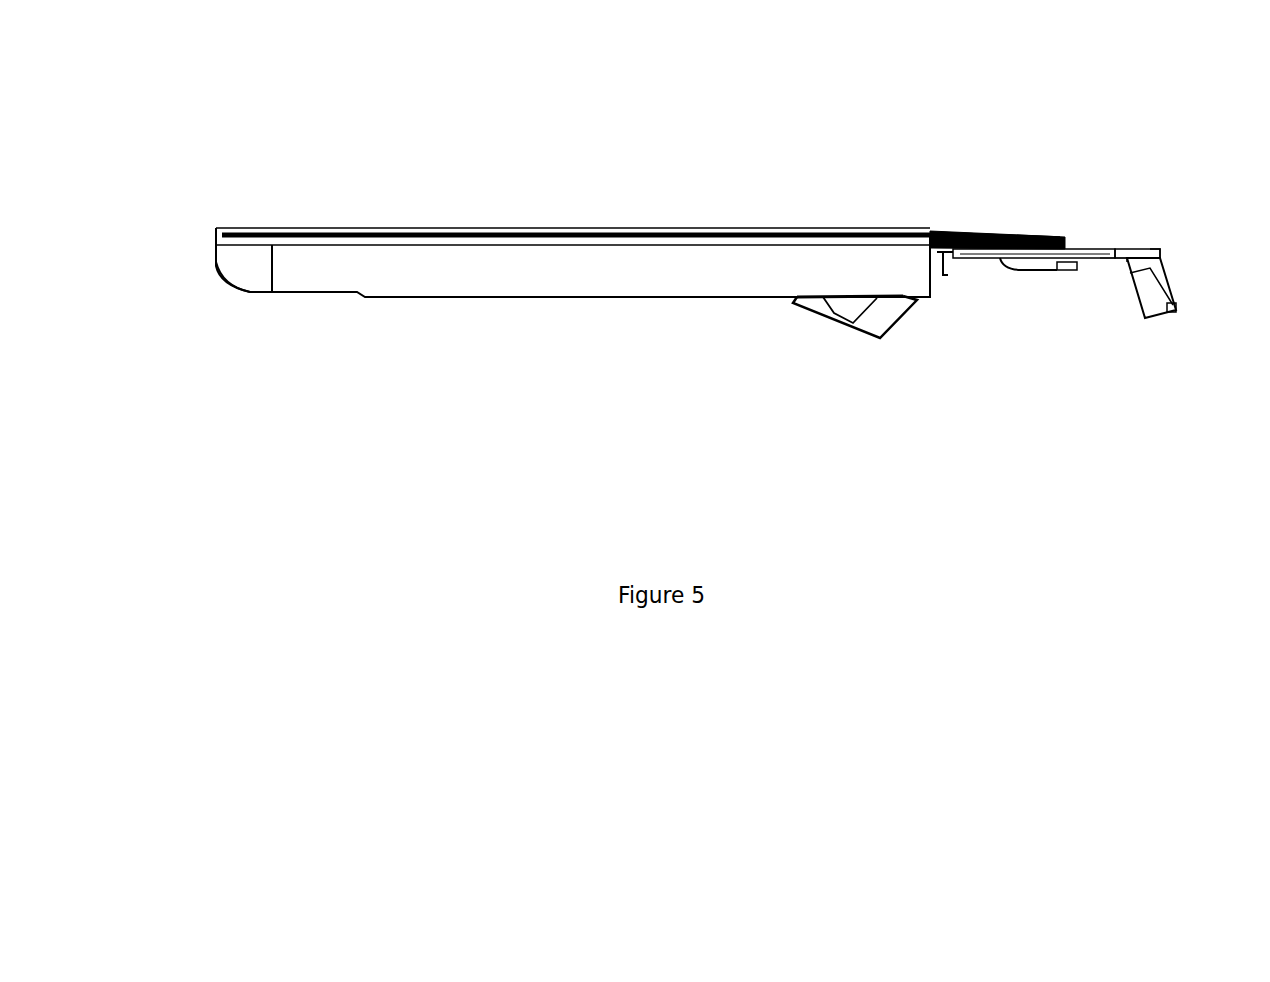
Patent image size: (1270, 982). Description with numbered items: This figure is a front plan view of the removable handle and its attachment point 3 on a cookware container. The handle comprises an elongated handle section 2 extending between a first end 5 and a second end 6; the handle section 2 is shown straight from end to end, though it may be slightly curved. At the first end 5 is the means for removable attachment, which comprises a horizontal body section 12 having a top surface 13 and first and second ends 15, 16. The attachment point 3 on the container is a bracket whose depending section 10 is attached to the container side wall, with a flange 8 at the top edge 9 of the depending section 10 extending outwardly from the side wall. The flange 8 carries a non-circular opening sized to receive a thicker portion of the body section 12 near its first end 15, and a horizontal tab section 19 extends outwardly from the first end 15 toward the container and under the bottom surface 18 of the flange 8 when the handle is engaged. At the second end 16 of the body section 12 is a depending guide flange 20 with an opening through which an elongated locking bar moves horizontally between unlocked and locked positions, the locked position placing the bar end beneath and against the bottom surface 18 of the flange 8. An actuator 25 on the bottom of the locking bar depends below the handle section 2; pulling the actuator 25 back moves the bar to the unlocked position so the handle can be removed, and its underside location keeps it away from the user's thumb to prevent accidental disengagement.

The elongated handle section 2 is at (542, 273).
The attachment point 3 is at (1088, 311).
The first end 5 is at (921, 276).
The second end 6 is at (247, 275).
The flange 8 is at (1127, 248).
The top edge 9 is at (1152, 250).
The depending section 10 is at (1147, 290).
The horizontal body section 12 is at (963, 237).
The top surface 13 is at (997, 238).
The first end 15 is at (1045, 247).
The second end 16 is at (960, 233).
The bottom surface 18 is at (1100, 258).
The horizontal tab section 19 is at (1068, 272).
The depending guide flange 20 is at (937, 268).
The actuator 25 is at (812, 326).